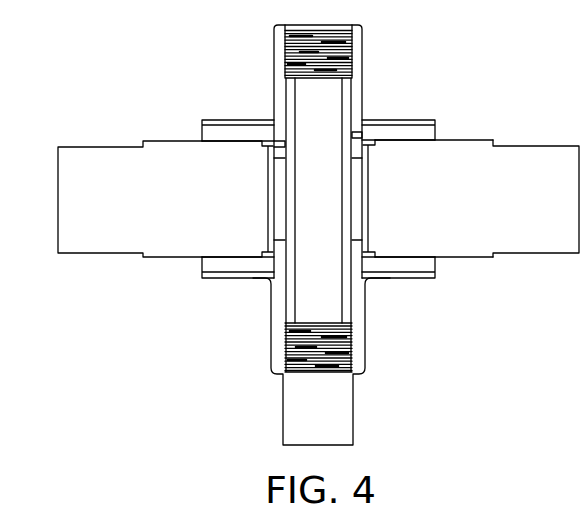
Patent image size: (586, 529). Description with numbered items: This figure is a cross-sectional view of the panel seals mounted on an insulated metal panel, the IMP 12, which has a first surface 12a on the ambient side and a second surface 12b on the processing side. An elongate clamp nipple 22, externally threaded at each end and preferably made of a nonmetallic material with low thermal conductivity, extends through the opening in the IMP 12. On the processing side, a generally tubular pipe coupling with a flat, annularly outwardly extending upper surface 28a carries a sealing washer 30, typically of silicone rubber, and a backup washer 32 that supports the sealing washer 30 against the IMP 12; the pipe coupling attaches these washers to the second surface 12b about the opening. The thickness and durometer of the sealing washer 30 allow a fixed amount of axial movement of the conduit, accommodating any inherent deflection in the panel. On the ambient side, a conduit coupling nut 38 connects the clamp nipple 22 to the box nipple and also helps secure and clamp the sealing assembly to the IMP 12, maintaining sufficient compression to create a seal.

The IMP 12 is at (556, 155).
The first surface 12a is at (513, 140).
The second surface 12b is at (511, 258).
The clamp nipple 22 is at (338, 294).
The upper surface 28a is at (262, 280).
The sealing washer 30 is at (202, 129).
The backup washer 32 is at (210, 118).
The conduit coupling nut 38 is at (357, 40).